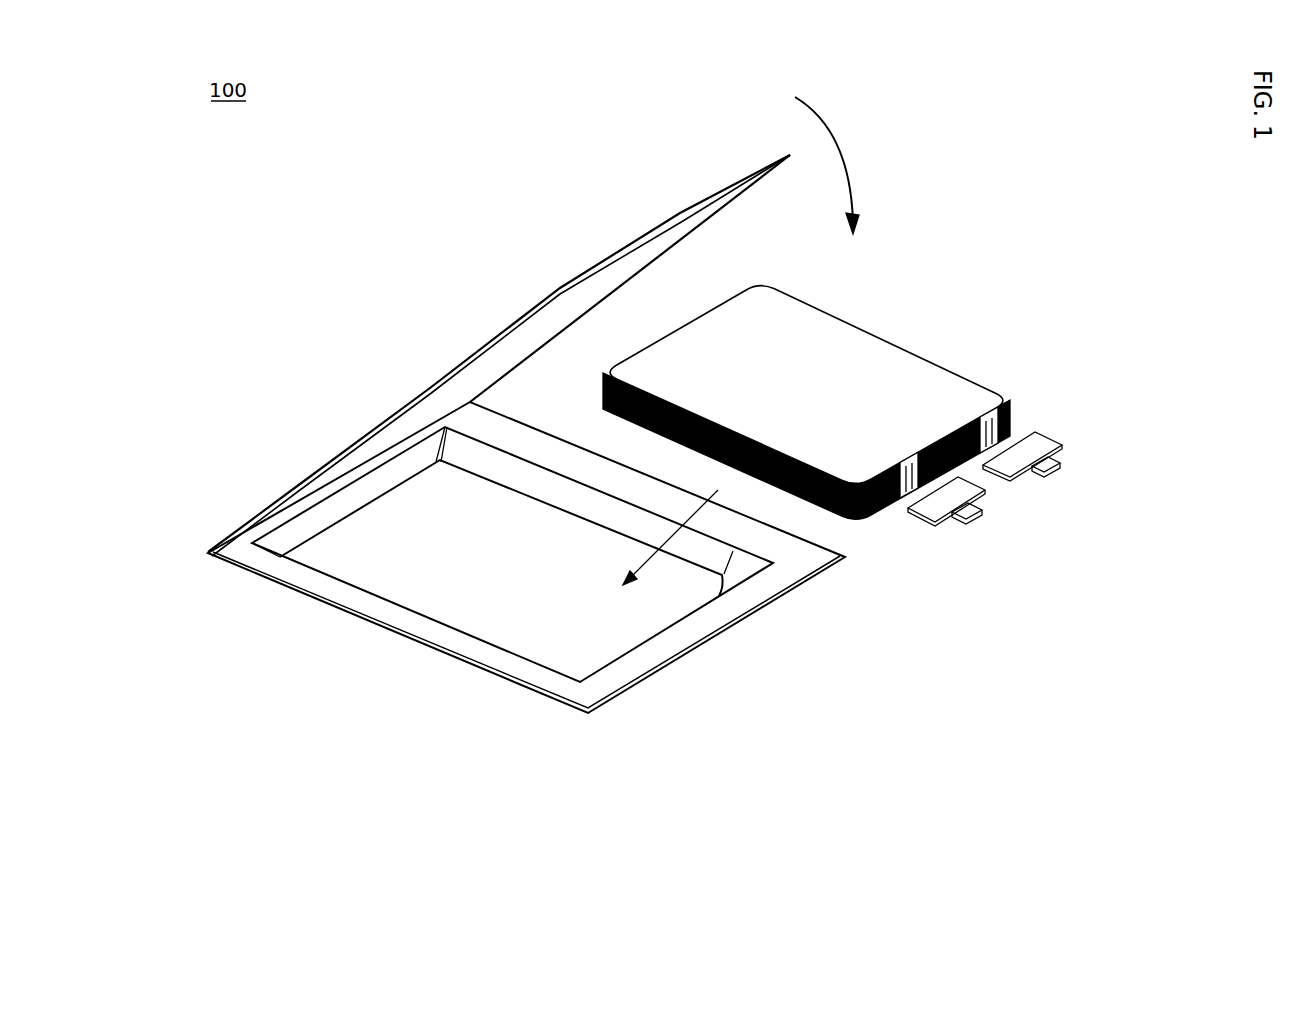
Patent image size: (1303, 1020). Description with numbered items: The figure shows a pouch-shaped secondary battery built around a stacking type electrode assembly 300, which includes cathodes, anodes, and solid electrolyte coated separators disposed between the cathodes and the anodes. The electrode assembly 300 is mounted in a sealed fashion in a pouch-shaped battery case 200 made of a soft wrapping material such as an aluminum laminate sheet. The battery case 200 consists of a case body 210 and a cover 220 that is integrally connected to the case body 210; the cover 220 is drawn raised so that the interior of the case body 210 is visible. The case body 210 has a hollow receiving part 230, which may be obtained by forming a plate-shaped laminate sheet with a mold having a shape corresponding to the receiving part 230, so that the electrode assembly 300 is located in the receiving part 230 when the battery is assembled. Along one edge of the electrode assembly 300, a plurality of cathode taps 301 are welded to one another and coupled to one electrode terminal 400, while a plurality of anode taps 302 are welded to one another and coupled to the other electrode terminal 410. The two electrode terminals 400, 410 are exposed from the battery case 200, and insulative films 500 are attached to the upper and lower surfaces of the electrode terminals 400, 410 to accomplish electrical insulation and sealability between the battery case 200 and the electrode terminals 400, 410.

The battery case 200 is at (325, 402).
The case body 210 is at (452, 663).
The cover 220 is at (562, 287).
The receiving part 230 is at (613, 643).
The electrode assembly 300 is at (898, 362).
The cathode taps 301 is at (990, 432).
The anode taps 302 is at (903, 505).
The electrode terminal 400 is at (1062, 450).
The electrode terminal 410 is at (962, 510).
The insulative films 500 is at (980, 514).